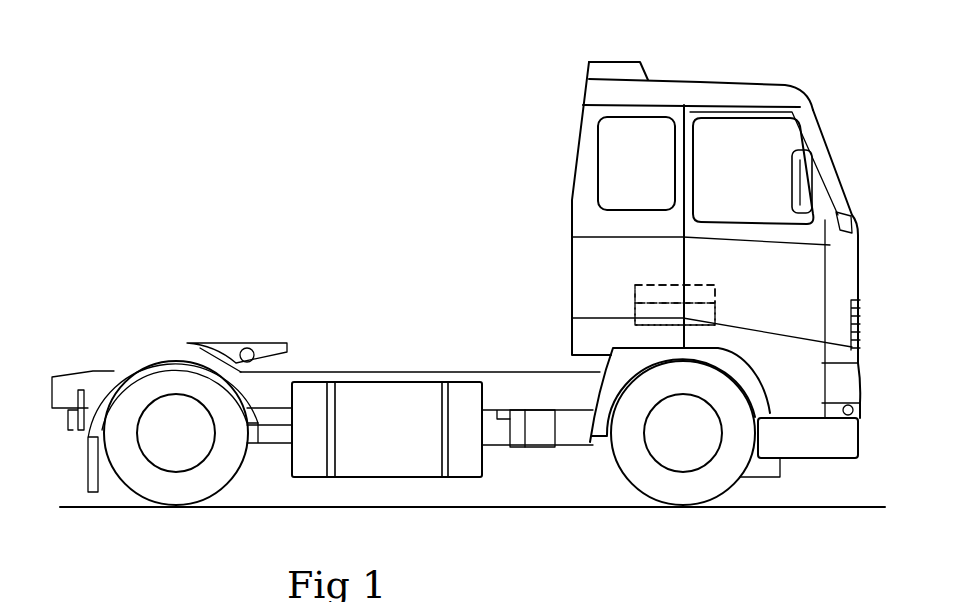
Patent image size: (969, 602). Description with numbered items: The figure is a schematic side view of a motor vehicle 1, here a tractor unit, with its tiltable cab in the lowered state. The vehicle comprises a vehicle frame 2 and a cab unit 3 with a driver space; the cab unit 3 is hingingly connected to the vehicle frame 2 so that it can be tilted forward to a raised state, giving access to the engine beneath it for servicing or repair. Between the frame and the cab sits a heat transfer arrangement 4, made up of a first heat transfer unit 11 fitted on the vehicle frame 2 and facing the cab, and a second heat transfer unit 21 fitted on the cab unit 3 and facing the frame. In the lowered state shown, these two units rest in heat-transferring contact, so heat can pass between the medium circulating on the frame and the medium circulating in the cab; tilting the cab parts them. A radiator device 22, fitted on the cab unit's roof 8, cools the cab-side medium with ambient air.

The motor vehicle 1 is at (400, 134).
The vehicle frame 2 is at (497, 372).
The cab unit 3 is at (575, 207).
The heat transfer arrangement 4 is at (736, 280).
The roof 8 is at (683, 82).
The first heat transfer unit 11 is at (710, 310).
The second heat transfer unit 21 is at (656, 291).
The radiator device 22 is at (614, 68).